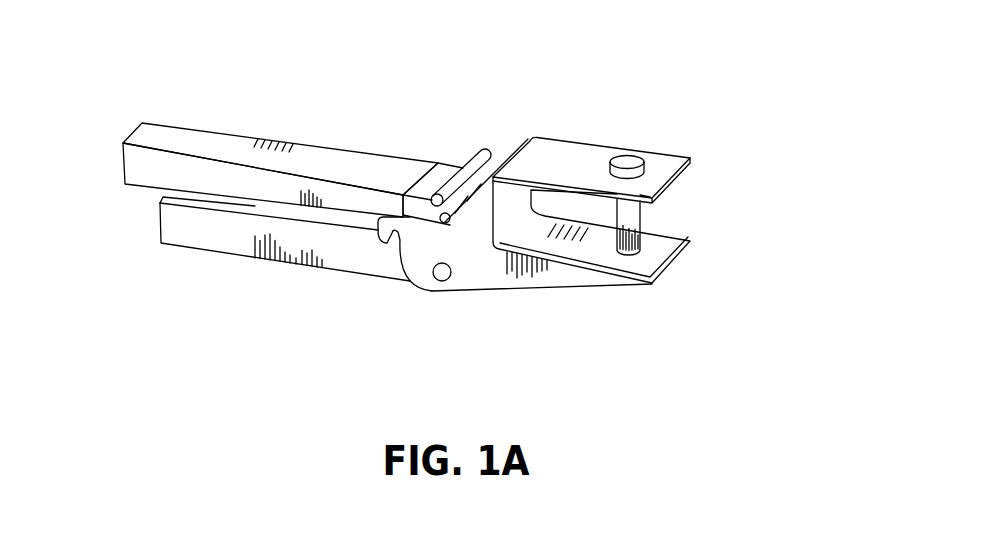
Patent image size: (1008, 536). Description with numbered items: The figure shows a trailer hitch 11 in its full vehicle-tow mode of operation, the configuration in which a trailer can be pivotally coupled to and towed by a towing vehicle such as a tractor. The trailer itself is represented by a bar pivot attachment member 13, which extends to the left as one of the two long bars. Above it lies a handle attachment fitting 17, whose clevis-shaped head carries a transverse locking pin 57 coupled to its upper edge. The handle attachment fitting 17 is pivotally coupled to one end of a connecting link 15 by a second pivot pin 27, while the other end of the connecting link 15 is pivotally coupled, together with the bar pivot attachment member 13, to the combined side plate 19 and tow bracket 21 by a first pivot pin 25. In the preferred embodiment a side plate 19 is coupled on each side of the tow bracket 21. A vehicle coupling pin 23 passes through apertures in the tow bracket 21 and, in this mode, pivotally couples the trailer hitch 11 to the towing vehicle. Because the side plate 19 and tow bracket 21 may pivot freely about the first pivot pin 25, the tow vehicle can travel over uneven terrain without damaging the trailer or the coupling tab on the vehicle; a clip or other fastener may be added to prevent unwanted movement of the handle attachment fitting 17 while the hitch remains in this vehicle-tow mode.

The trailer hitch 11 is at (237, 113).
The bar pivot attachment member 13 is at (235, 235).
The connecting link 15 is at (480, 177).
The handle attachment fitting 17 is at (403, 170).
The side plate 19 is at (491, 274).
The tow bracket 21 is at (557, 162).
The vehicle coupling pin 23 is at (636, 222).
The first pivot pin 25 is at (440, 283).
The second pivot pin 27 is at (438, 226).
The transverse locking pin 57 is at (471, 152).